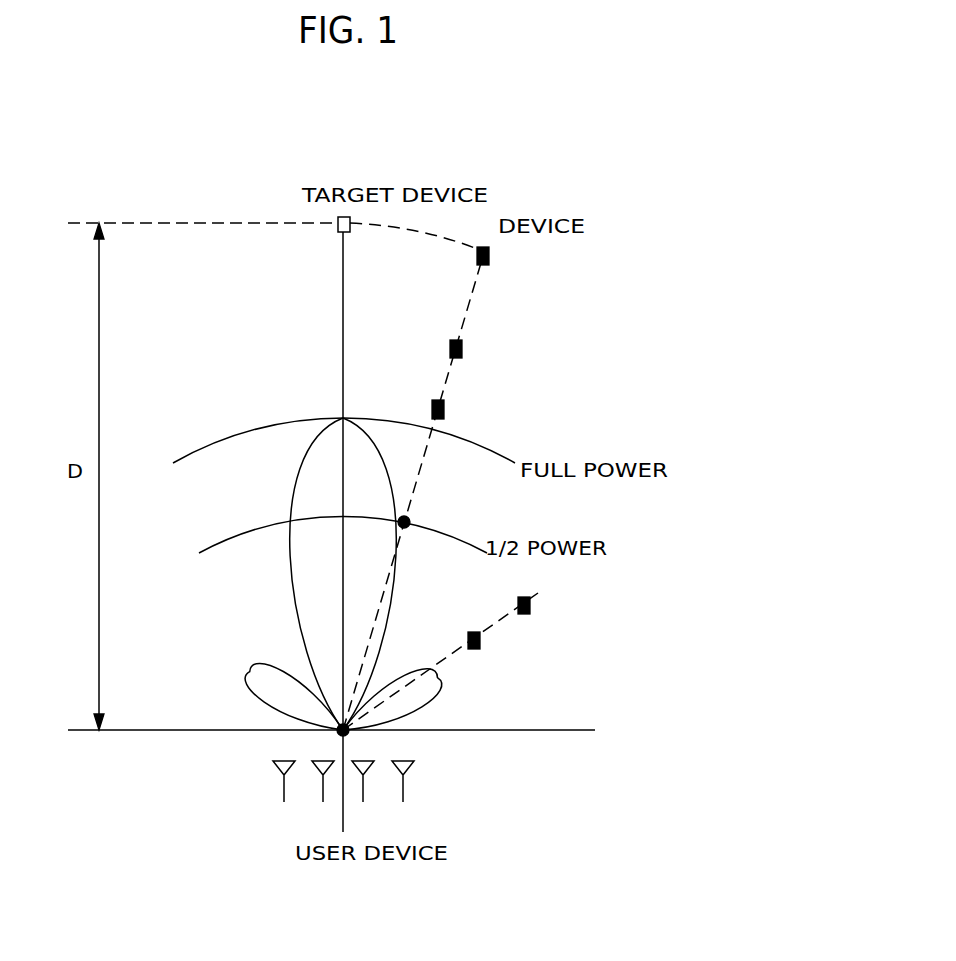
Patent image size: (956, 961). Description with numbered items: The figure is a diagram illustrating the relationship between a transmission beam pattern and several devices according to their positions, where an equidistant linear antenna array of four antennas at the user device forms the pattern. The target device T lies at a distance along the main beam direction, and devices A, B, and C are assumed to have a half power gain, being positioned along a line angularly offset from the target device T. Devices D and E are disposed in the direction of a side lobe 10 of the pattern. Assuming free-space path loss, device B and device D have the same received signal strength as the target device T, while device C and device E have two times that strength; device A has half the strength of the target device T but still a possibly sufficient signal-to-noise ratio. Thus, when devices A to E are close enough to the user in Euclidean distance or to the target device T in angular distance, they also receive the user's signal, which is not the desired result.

The side lobe 10 is at (425, 697).
The target device T is at (352, 237).
The device A is at (492, 262).
The device B is at (467, 352).
The device C is at (450, 412).
The device D is at (533, 618).
The device E is at (472, 657).